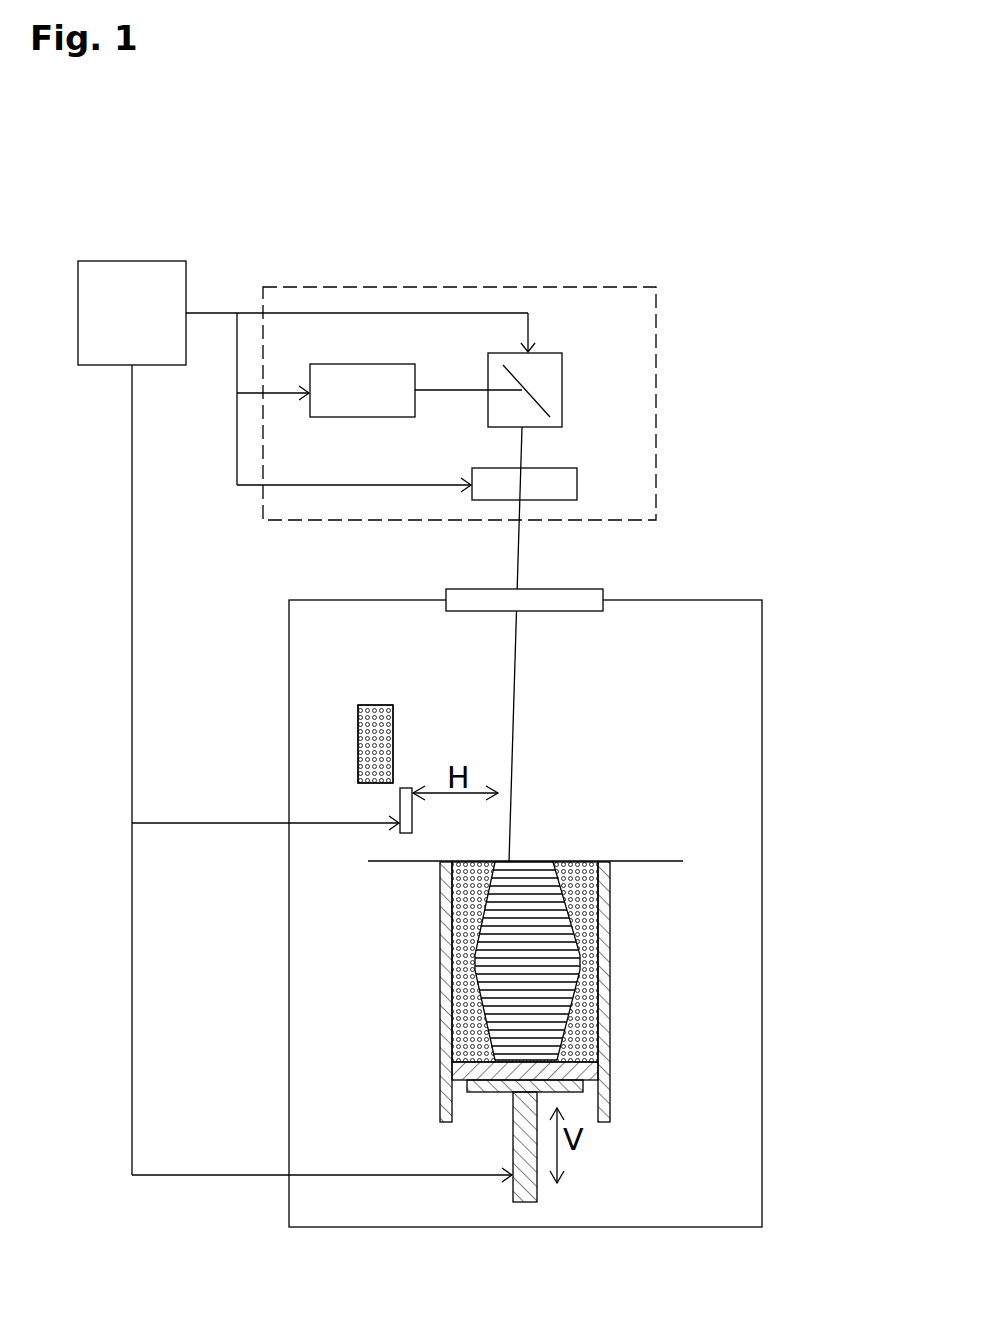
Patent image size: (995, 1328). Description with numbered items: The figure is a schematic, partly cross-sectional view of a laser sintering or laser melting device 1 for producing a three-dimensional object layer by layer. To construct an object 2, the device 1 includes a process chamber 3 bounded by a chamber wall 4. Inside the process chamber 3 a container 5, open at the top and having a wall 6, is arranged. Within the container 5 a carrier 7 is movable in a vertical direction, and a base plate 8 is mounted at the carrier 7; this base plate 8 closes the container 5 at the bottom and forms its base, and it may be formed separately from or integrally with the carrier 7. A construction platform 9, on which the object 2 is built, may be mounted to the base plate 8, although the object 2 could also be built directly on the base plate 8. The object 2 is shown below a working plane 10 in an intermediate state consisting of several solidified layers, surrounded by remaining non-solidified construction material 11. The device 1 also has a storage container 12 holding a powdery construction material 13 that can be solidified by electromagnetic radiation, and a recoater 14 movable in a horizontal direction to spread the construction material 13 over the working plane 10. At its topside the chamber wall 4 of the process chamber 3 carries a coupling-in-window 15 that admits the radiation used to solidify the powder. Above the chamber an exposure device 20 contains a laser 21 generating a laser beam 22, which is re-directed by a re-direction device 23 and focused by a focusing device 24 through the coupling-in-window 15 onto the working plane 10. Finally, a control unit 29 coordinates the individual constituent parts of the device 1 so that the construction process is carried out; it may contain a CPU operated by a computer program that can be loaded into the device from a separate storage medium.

The laser sintering or laser melting device 1 is at (777, 173).
The control unit 29 is at (306, 721).
The exposure device 20 is at (656, 390).
The laser 21 is at (362, 418).
The laser beam 22 is at (435, 390).
The re-direction device 23 is at (553, 365).
The focusing device 24 is at (550, 480).
The chamber wall 4 is at (330, 600).
The process chamber 3 is at (393, 625).
The coupling-in-window 15 is at (555, 600).
The storage container 12 is at (373, 705).
The powdery construction material 13 is at (393, 745).
The recoater 14 is at (400, 800).
The working plane 10 is at (588, 860).
The object 2 is at (540, 903).
The non-solidified construction material 11 is at (440, 898).
The wall 6 is at (605, 990).
The container 5 is at (612, 1044).
The construction platform 9 is at (440, 1066).
The base plate 8 is at (467, 1084).
The carrier 7 is at (505, 1095).